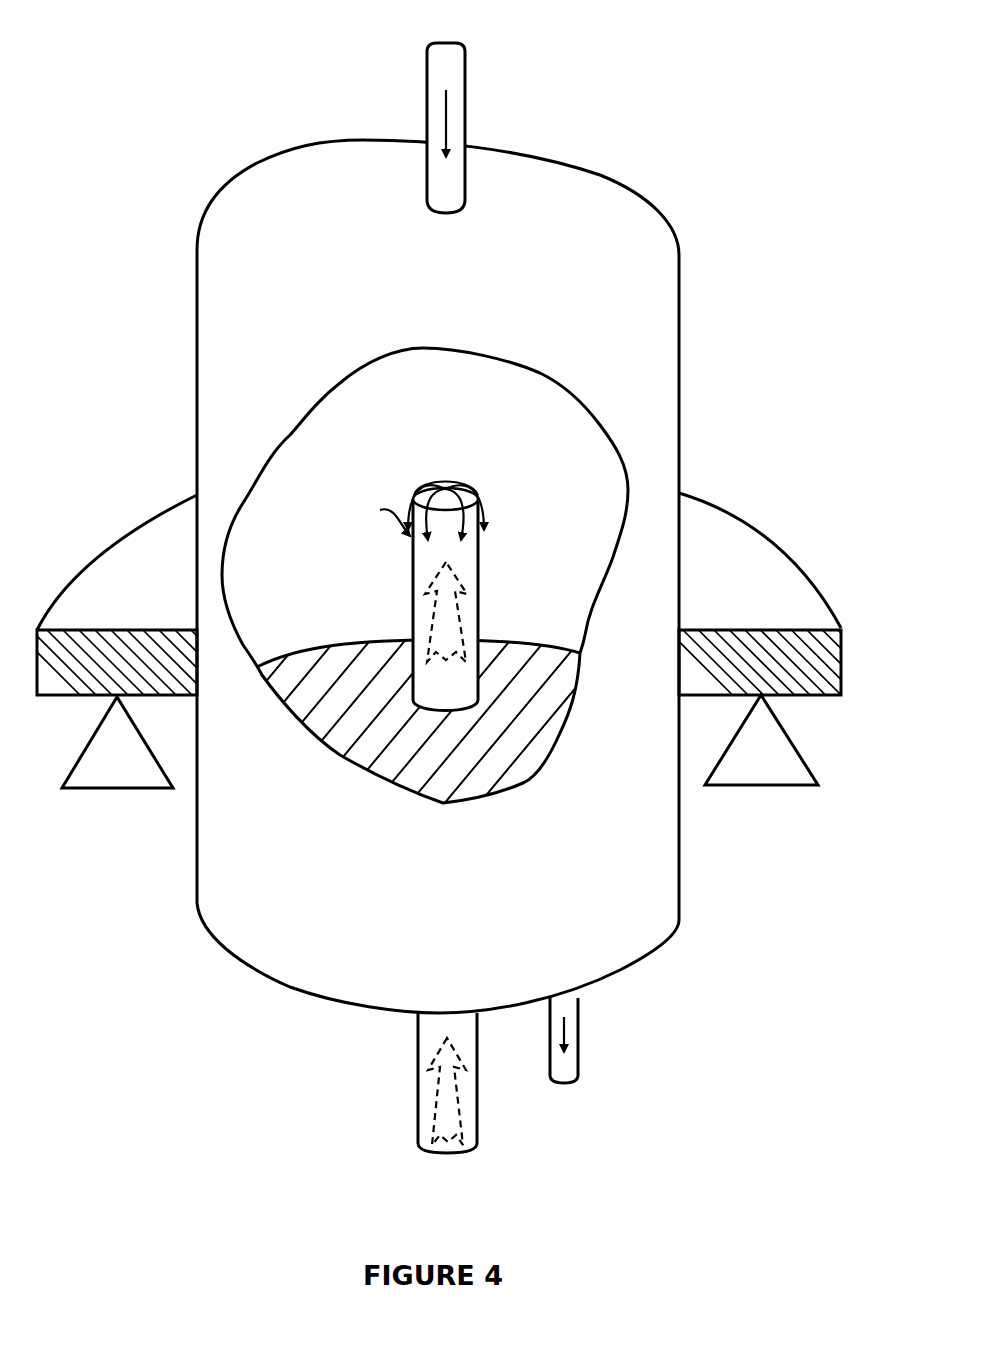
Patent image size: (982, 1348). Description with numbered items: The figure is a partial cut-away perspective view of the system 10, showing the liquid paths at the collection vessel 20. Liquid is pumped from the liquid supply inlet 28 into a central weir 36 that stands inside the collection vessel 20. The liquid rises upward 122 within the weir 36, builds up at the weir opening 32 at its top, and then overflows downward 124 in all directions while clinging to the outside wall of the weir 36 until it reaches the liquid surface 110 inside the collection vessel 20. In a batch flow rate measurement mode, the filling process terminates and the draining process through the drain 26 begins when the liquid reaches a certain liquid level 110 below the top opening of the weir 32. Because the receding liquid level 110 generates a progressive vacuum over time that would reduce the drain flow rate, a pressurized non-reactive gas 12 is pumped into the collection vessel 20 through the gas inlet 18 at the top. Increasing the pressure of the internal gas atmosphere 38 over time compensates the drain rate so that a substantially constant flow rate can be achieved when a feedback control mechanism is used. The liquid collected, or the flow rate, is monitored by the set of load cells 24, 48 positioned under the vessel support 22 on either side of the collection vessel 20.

The system 10 is at (750, 241).
The pressurized non-reactive gas 12 is at (446, 111).
The gas inlet 18 is at (430, 48).
The collection vessel 20 is at (197, 236).
The vessel support 22 is at (737, 516).
The load cell 24 is at (772, 787).
The drain 26 is at (568, 1083).
The liquid supply inlet 28 is at (446, 1153).
The weir opening 32 is at (450, 486).
The weir 36 is at (478, 582).
The internal gas atmosphere 38 is at (273, 508).
The load cell 48 is at (130, 789).
The liquid surface 110 is at (337, 643).
The upward liquid flow 122 is at (446, 612).
The downward overflow 124 is at (376, 522).